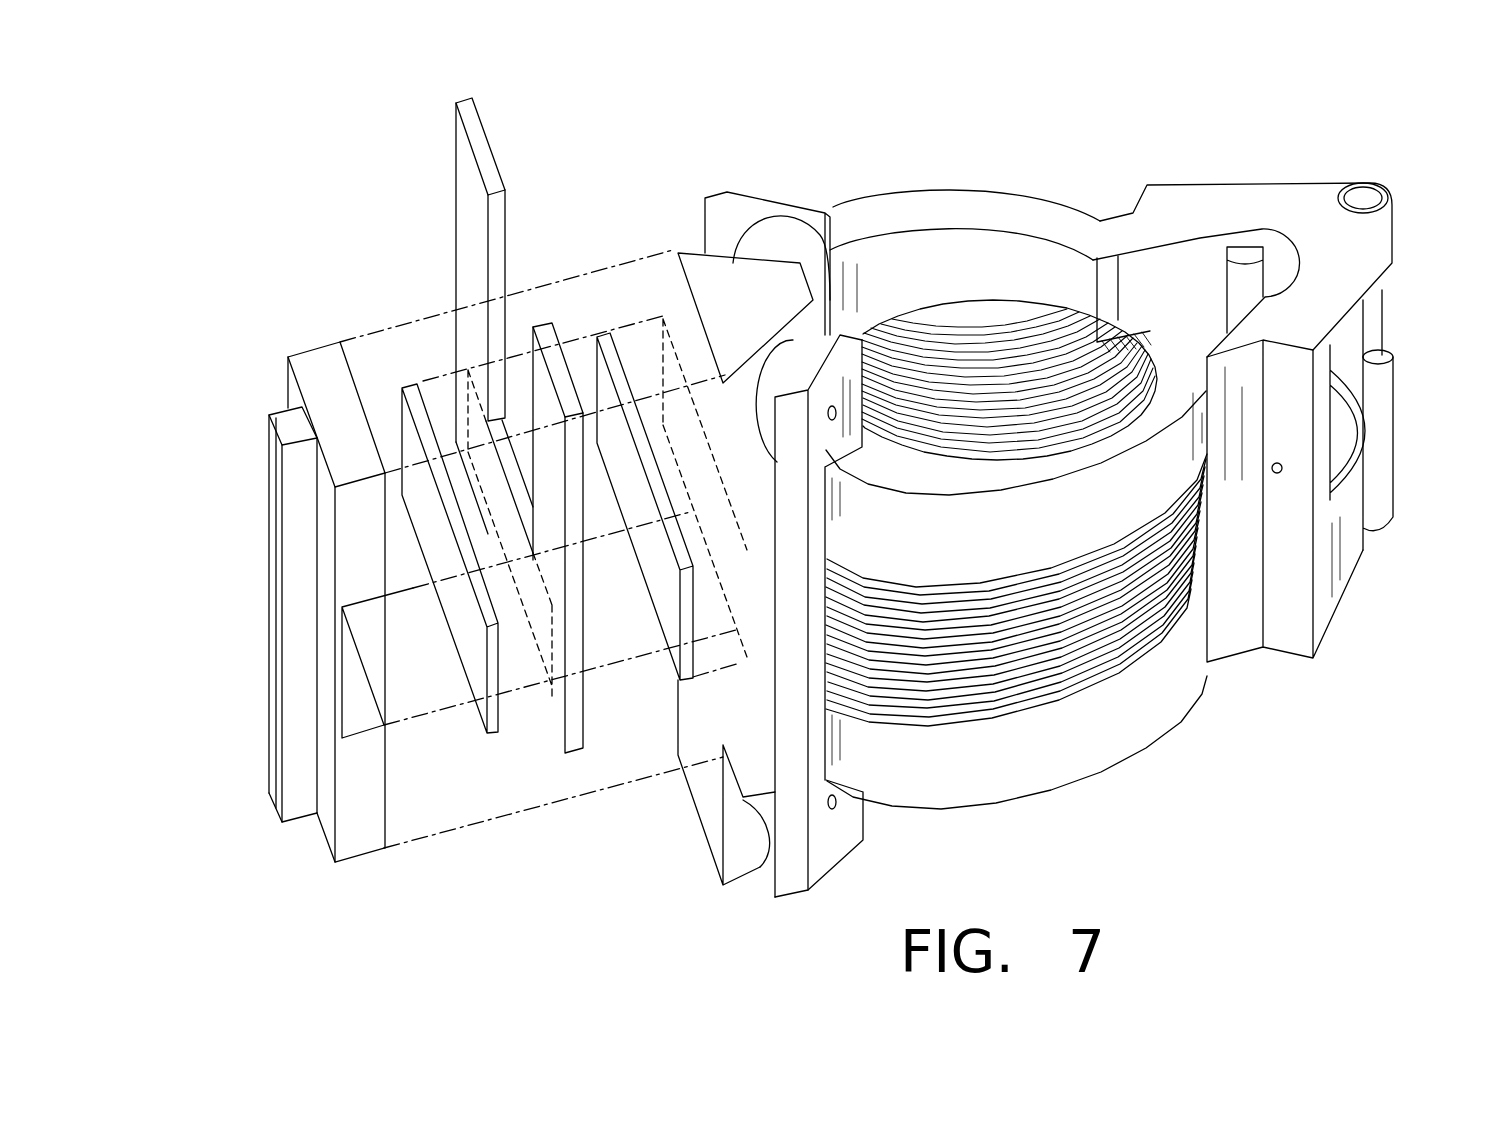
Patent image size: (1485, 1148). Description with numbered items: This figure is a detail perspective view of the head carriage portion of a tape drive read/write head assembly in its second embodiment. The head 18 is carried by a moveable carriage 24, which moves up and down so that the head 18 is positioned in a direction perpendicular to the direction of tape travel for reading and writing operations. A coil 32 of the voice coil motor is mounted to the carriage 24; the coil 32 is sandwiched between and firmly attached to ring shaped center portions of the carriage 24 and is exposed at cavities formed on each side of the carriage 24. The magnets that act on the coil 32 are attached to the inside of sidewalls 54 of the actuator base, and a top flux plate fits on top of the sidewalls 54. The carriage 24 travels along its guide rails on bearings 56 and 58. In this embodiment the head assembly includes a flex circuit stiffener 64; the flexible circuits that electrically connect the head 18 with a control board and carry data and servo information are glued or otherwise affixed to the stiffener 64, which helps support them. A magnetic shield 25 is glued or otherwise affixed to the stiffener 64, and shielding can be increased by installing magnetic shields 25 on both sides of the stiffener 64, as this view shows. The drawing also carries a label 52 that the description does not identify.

The head 18 is at (270, 628).
The carriage 24 is at (989, 155).
The magnetic shield 25 is at (594, 333).
The coil 32 is at (1163, 617).
The bracket plate 52 is at (690, 260).
The sidewalls 54 is at (1283, 200).
The bearings 56 is at (787, 342).
The bearings 58 is at (1368, 412).
The flex circuit stiffener 64 is at (466, 212).